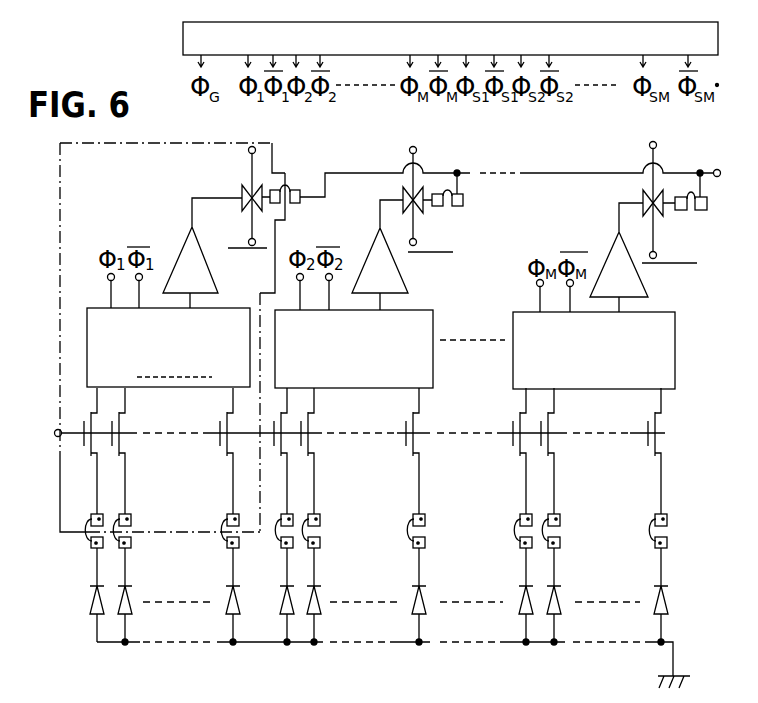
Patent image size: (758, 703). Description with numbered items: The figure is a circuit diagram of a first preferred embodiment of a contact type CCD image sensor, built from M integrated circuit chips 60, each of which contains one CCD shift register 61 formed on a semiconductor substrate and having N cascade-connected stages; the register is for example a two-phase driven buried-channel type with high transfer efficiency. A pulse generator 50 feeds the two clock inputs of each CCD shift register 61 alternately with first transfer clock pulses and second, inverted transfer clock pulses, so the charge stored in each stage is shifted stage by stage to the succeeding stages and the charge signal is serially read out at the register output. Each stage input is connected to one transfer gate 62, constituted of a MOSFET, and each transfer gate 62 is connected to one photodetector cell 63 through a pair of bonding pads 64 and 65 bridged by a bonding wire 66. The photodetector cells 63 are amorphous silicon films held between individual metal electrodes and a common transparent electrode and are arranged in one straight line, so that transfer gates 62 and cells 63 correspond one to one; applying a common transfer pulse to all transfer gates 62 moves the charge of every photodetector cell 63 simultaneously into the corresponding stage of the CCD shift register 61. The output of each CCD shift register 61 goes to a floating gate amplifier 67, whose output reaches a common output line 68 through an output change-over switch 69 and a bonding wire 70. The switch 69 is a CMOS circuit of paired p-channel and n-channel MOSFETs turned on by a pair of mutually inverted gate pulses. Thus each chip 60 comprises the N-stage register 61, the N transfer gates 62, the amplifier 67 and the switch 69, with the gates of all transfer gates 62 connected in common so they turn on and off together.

The pulse generator 50 is at (183, 31).
The integrated circuit chip 60 is at (60, 214).
The CCD shift register 61 is at (87, 323).
The transfer gate 62 is at (84, 448).
The photodetector cell 63 is at (89, 598).
The bonding pad 64 is at (91, 518).
The bonding pad 65 is at (103, 548).
The bonding wire 66 is at (89, 542).
The floating gate amplifier 67 is at (181, 252).
The common output line 68 is at (548, 174).
The output change-over switch 69 is at (242, 192).
The bonding wire 70 is at (290, 186).